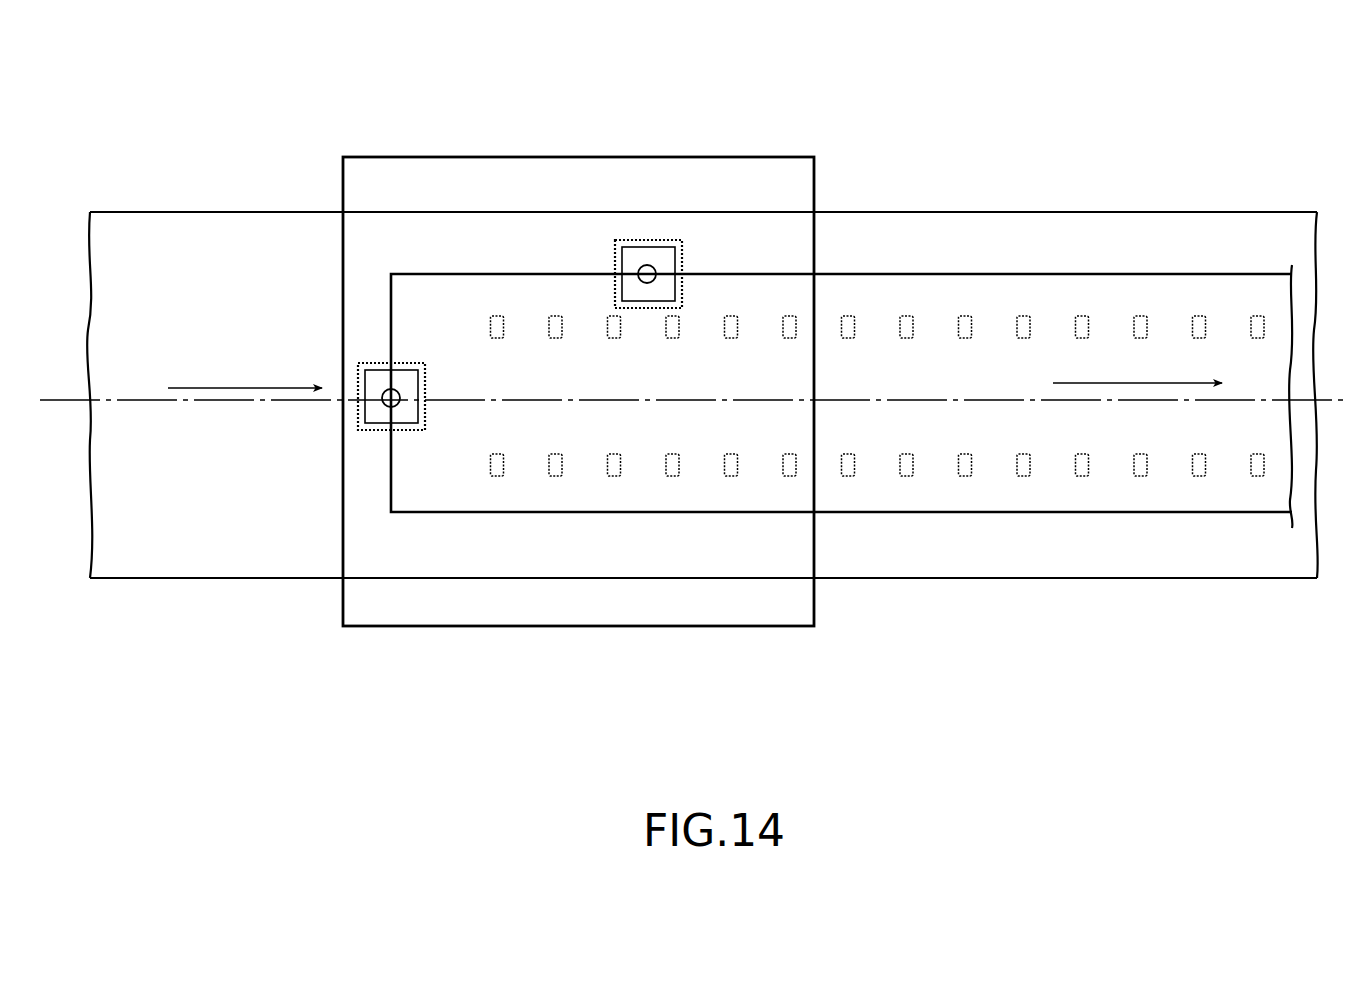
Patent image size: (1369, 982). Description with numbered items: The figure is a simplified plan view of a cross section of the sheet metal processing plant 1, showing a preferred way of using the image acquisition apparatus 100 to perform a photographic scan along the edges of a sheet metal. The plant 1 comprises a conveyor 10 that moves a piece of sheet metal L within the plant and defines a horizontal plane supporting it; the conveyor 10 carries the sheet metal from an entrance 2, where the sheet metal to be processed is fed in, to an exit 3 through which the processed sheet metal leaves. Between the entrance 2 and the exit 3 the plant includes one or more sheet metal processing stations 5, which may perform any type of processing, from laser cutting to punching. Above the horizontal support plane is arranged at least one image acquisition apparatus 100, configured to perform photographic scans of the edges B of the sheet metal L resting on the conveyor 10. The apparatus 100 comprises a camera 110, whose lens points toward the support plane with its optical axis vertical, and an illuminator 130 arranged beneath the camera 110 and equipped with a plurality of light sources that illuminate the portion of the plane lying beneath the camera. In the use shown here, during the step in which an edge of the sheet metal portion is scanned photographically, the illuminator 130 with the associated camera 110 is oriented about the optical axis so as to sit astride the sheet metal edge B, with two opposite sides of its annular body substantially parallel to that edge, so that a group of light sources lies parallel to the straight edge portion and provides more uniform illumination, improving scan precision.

The sheet metal processing plant 1 is at (899, 125).
The entrance 2 is at (60, 487).
The exit 3 is at (1345, 450).
The sheet metal processing station 5 is at (428, 628).
The conveyor 10 is at (1045, 553).
The image acquisition apparatus 100 is at (375, 358).
The camera 110 is at (647, 245).
The illuminator 130 is at (614, 257).
The edges of the sheet metal B is at (963, 274).
The sheet metal L is at (1208, 293).